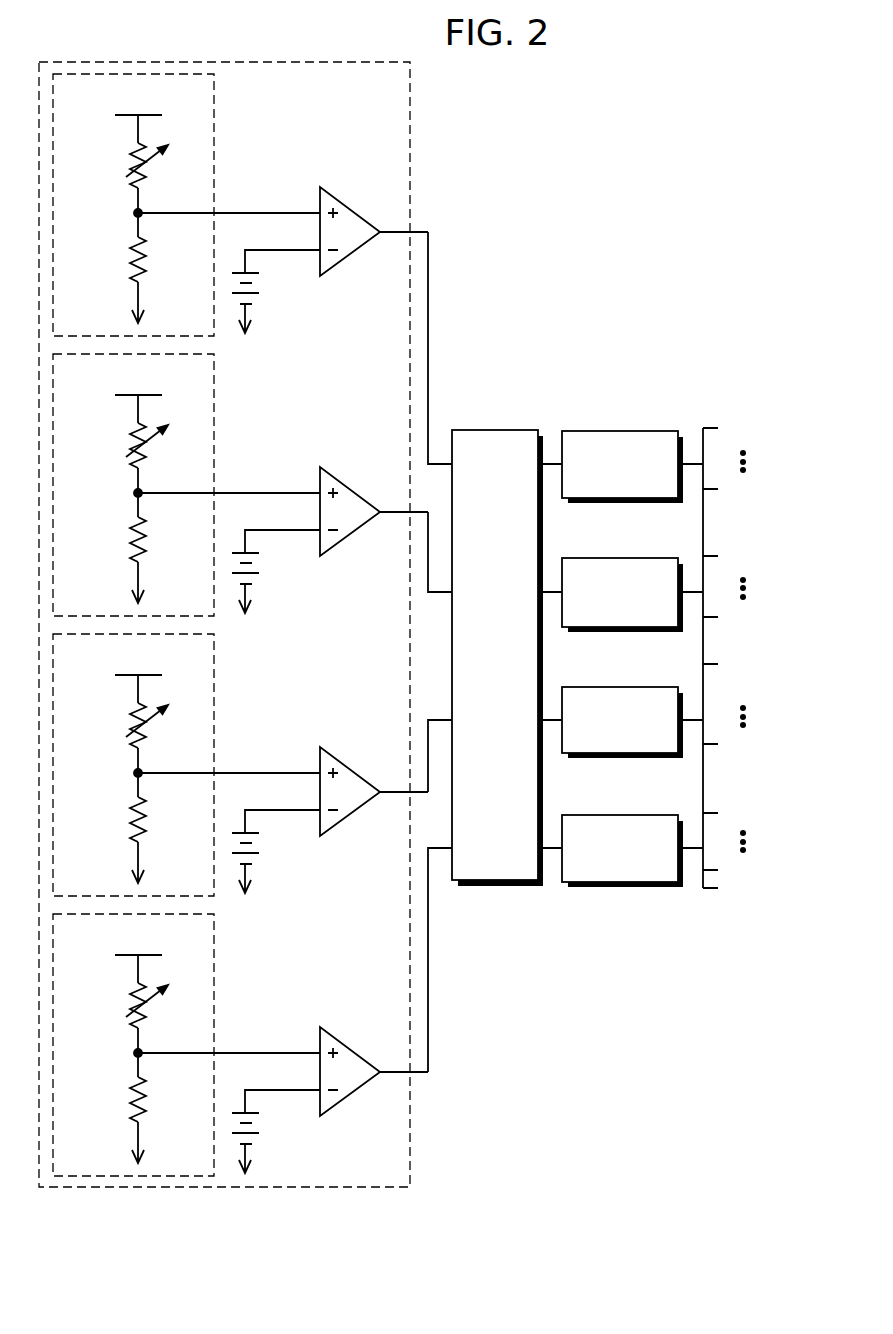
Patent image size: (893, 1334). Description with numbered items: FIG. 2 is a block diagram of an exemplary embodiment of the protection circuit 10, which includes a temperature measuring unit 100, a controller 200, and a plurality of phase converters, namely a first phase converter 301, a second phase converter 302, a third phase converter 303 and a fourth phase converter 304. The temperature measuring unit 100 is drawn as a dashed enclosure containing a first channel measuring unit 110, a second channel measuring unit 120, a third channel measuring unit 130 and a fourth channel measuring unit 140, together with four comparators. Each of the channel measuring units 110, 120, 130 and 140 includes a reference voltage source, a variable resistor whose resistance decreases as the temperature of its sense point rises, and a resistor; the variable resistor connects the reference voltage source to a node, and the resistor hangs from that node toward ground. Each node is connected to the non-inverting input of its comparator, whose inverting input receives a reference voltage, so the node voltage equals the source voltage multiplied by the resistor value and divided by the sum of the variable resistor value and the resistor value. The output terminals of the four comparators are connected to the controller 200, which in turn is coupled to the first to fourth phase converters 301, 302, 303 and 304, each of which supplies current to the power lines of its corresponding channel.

The protection circuit 10 is at (592, 115).
The temperature measuring unit 100 is at (410, 127).
The first channel measuring unit 110 is at (214, 100).
The second channel measuring unit 120 is at (214, 380).
The third channel measuring unit 130 is at (214, 660).
The fourth channel measuring unit 140 is at (214, 940).
The controller 200 is at (493, 428).
The first phase converter 301 is at (612, 431).
The second phase converter 302 is at (612, 558).
The third phase converter 303 is at (612, 687).
The fourth phase converter 304 is at (612, 815).